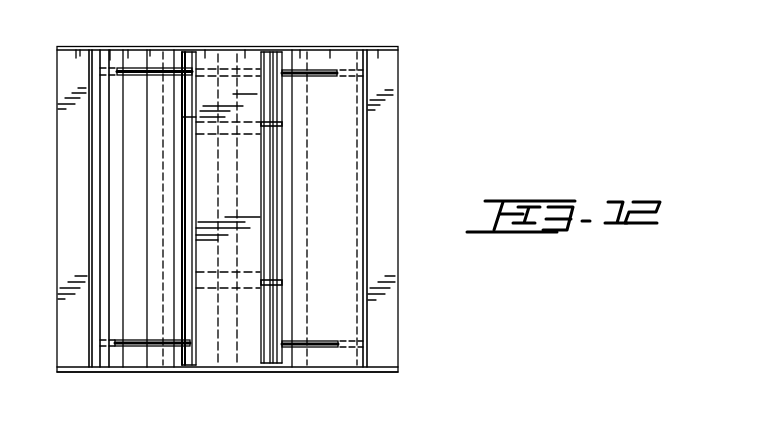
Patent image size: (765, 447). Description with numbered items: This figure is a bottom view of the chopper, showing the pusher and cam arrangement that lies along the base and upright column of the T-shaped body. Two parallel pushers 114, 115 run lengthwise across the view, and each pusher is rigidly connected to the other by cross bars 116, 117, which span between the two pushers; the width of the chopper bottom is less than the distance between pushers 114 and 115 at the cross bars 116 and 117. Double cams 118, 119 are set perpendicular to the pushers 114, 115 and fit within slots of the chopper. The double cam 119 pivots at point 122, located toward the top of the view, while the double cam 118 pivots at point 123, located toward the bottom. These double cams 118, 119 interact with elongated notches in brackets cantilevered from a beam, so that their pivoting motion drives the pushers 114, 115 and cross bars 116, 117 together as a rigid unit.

The pusher 114 is at (283, 160).
The pusher 115 is at (186, 117).
The cross bar 116 is at (283, 125).
The cross bar 117 is at (278, 283).
The double cam 118 is at (316, 343).
The double cam 119 is at (334, 68).
The pivot point 122 is at (230, 46).
The pivot point 123 is at (232, 373).